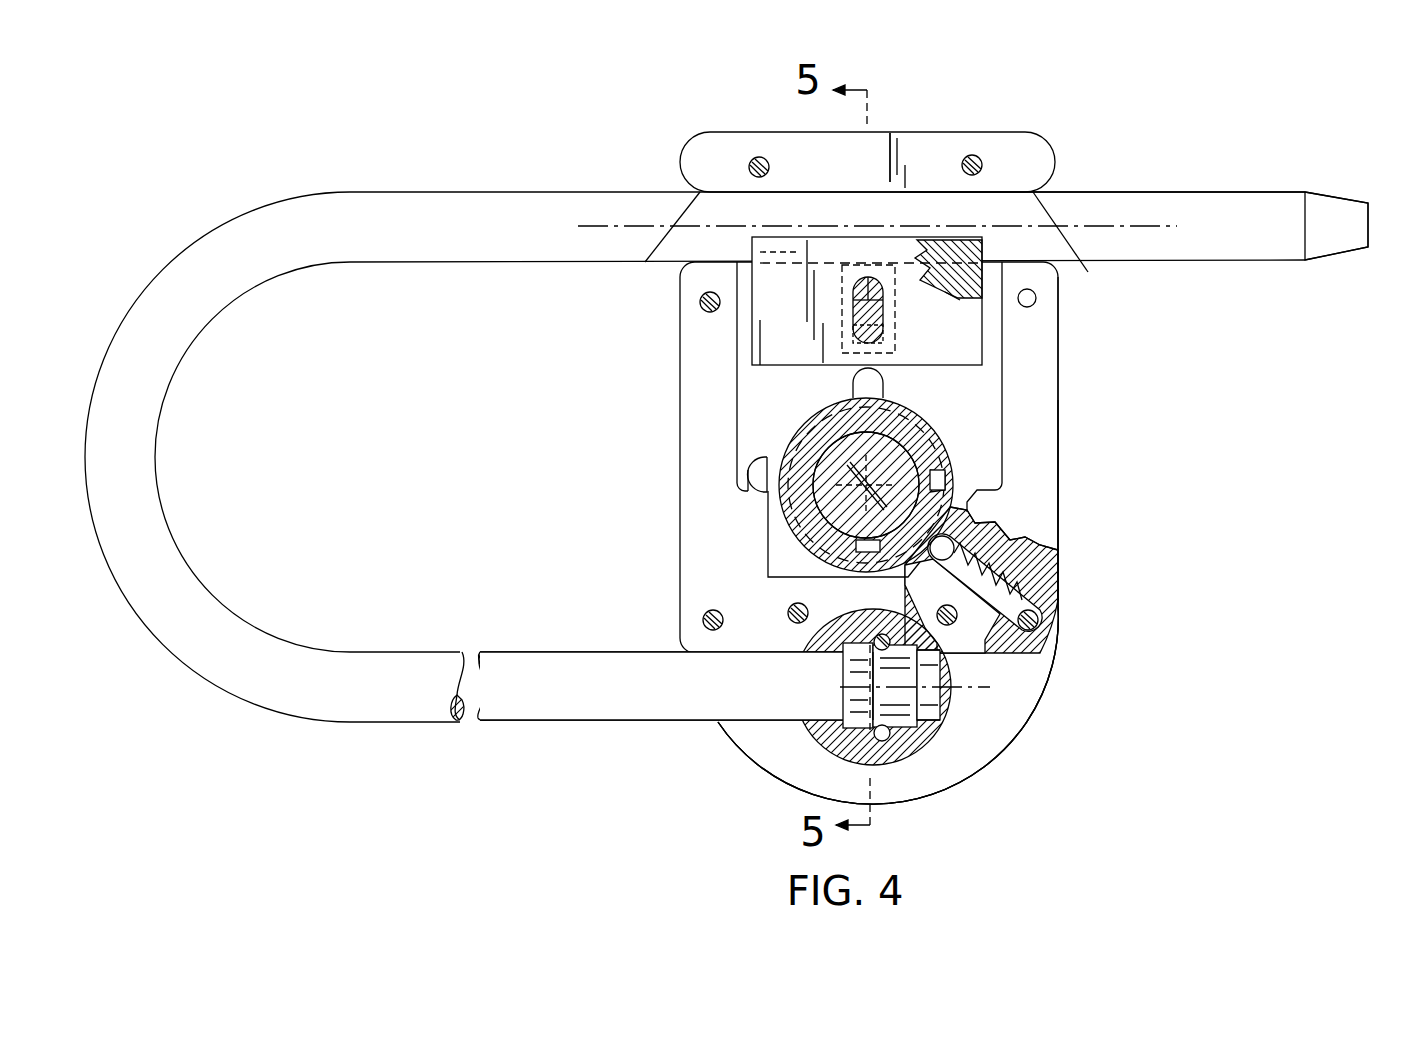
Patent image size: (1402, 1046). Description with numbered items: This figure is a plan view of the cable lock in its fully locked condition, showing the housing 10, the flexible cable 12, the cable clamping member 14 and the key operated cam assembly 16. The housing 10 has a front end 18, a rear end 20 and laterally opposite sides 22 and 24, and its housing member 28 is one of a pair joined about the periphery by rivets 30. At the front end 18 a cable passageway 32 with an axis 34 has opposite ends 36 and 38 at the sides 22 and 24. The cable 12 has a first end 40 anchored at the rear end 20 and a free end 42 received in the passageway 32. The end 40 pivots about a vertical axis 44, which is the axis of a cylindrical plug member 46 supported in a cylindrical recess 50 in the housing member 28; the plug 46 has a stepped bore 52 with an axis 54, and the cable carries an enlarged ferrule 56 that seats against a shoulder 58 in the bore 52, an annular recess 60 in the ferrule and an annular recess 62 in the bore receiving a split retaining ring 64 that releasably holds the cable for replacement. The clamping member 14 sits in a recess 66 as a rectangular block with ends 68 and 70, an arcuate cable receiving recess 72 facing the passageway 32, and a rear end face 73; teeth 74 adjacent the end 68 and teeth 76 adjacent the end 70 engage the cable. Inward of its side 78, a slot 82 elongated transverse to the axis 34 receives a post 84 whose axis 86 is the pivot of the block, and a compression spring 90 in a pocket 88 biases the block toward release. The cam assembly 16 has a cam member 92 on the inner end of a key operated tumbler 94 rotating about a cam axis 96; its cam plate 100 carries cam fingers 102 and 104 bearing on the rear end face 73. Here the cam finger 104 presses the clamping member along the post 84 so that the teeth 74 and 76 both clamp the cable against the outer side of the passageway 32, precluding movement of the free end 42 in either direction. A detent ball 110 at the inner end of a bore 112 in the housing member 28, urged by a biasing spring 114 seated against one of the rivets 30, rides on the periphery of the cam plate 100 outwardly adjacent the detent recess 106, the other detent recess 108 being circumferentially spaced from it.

The housing 10 is at (1152, 453).
The flexible cable 12 is at (1232, 188).
The cable clamping member 14 is at (753, 323).
The key operated cam assembly 16 is at (913, 472).
The front end 18 is at (958, 132).
The rear end 20 is at (743, 750).
The side 22 is at (680, 383).
The side 24 is at (1058, 337).
The housing member 28 is at (1058, 473).
The rivets 30 is at (752, 158).
The cable passageway 32 is at (858, 196).
The axis 34 is at (1152, 224).
The end 36 is at (657, 243).
The end 38 is at (1079, 243).
The first end 40 is at (790, 727).
The free end 42 is at (1288, 190).
The vertical axis 44 is at (905, 715).
The cylindrical plug member 46 is at (895, 750).
The cylindrical recess 50 is at (830, 757).
The stepped bore 52 is at (933, 652).
The axis 54 is at (920, 700).
The enlarged ferrule 56 is at (898, 745).
The shoulder 58 is at (893, 633).
The annular recess 60 is at (873, 705).
The annular recess 62 is at (882, 742).
The split retaining ring 64 is at (877, 647).
The recess 66 is at (995, 320).
The end 68 is at (750, 343).
The end 70 is at (983, 337).
The arcuate cable receiving recess 72 is at (936, 266).
The rear end face 73 is at (767, 367).
The cable engaging teeth 74 is at (776, 256).
The cable engaging teeth 76 is at (975, 296).
The side 78 is at (765, 352).
The slot 82 is at (884, 297).
The post 84 is at (873, 290).
The axis 86 is at (866, 306).
The pocket 88 is at (838, 292).
The compression spring 90 is at (880, 340).
The cam member 92 is at (750, 468).
The key operated tumbler 94 is at (833, 503).
The cam axis 96 is at (845, 444).
The cam plate 100 is at (948, 472).
The cam finger 102 is at (757, 474).
The cam finger 104 is at (880, 372).
The detent recess 106 is at (967, 508).
The detent recess 108 is at (946, 452).
The detent ball 110 is at (1015, 542).
The bore 112 is at (990, 570).
The biasing spring 114 is at (998, 592).